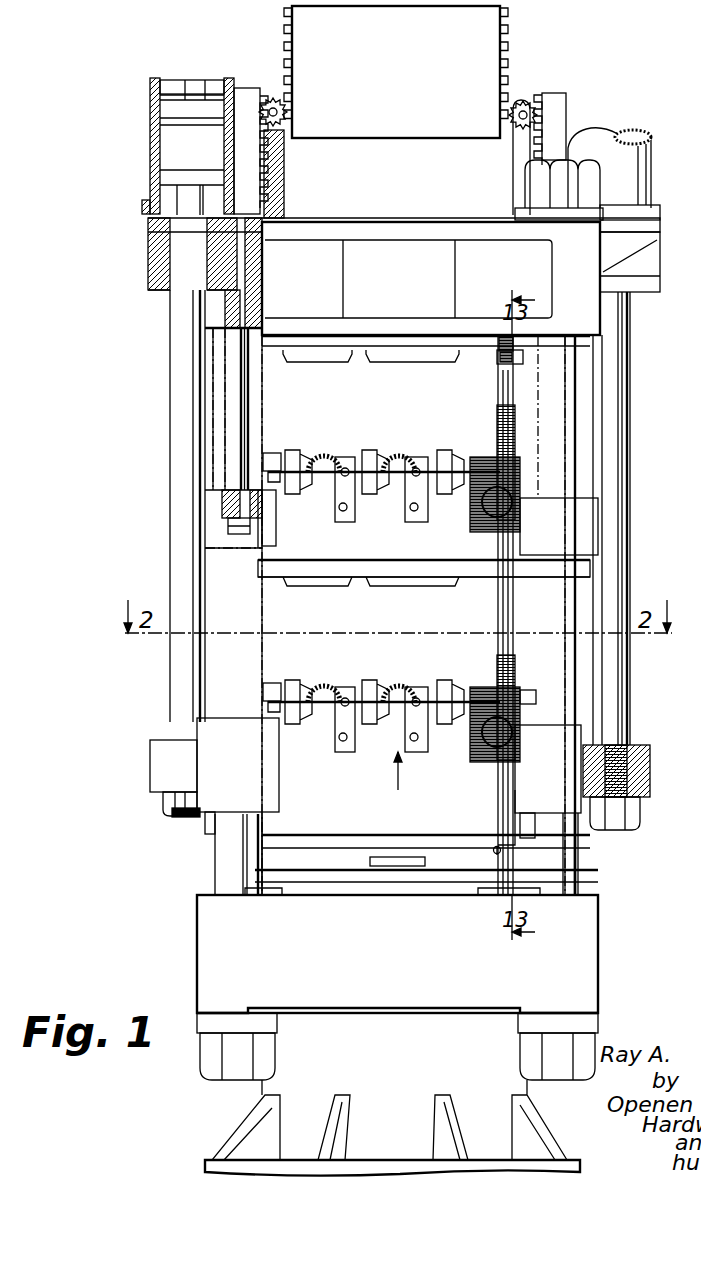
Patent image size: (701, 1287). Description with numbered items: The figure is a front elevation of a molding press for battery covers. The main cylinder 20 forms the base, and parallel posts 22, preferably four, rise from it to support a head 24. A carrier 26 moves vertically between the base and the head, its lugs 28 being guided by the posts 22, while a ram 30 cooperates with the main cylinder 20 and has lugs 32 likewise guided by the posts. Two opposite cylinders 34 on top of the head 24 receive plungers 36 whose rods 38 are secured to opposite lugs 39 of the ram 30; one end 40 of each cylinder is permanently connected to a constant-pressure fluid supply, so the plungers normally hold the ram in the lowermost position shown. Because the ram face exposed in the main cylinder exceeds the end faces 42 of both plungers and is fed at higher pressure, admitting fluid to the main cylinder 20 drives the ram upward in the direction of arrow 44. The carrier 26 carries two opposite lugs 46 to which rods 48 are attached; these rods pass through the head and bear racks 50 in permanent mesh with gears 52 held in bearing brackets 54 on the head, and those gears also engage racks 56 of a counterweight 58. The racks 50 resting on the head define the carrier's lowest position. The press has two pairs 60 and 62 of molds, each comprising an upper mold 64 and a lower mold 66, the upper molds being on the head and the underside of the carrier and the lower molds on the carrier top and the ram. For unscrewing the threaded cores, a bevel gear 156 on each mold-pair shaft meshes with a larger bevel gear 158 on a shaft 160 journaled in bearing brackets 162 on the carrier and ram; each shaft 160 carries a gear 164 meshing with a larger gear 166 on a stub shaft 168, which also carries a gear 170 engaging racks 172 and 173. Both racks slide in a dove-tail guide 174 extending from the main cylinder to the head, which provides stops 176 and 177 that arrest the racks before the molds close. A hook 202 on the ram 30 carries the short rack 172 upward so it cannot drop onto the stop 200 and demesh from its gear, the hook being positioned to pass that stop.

The main cylinder 20 is at (512, 1088).
The posts 22 is at (580, 866).
The head 24 is at (590, 322).
The carrier 26 is at (312, 580).
The lugs 28 is at (540, 527).
The ram 30 is at (324, 836).
The lugs 32 is at (556, 813).
The cylinders 34 is at (655, 160).
The plungers 36 is at (170, 130).
The rods 38 is at (628, 471).
The lugs 39 is at (650, 772).
The end of cylinder 40 is at (206, 80).
The end faces 42 is at (178, 80).
The arrow 44 is at (412, 771).
The lugs 46 is at (229, 520).
The rods 48 is at (240, 386).
The racks 50 is at (566, 98).
The gears 52 is at (528, 103).
The bearing brackets 54 is at (516, 165).
The racks 56 is at (508, 36).
The counterweight 58 is at (397, 132).
The pair of molds 60 is at (313, 348).
The pair of molds 62 is at (342, 582).
The upper mold 64 is at (431, 590).
The lower mold 66 is at (414, 674).
The bevel gear 156 is at (398, 724).
The bevel gear 158 is at (386, 724).
The shaft 160 is at (323, 722).
The bearing brackets 162 is at (536, 697).
The gears 164 is at (483, 694).
The gears 166 is at (490, 768).
The stub shafts 168 is at (471, 750).
The gears 170 is at (516, 738).
The rack 172 is at (520, 672).
The rack 173 is at (520, 448).
The dove-tail guide 174 is at (499, 342).
The stop 176 is at (518, 540).
The stop 177 is at (523, 362).
The stop 200 is at (516, 784).
The hook 202 is at (493, 850).